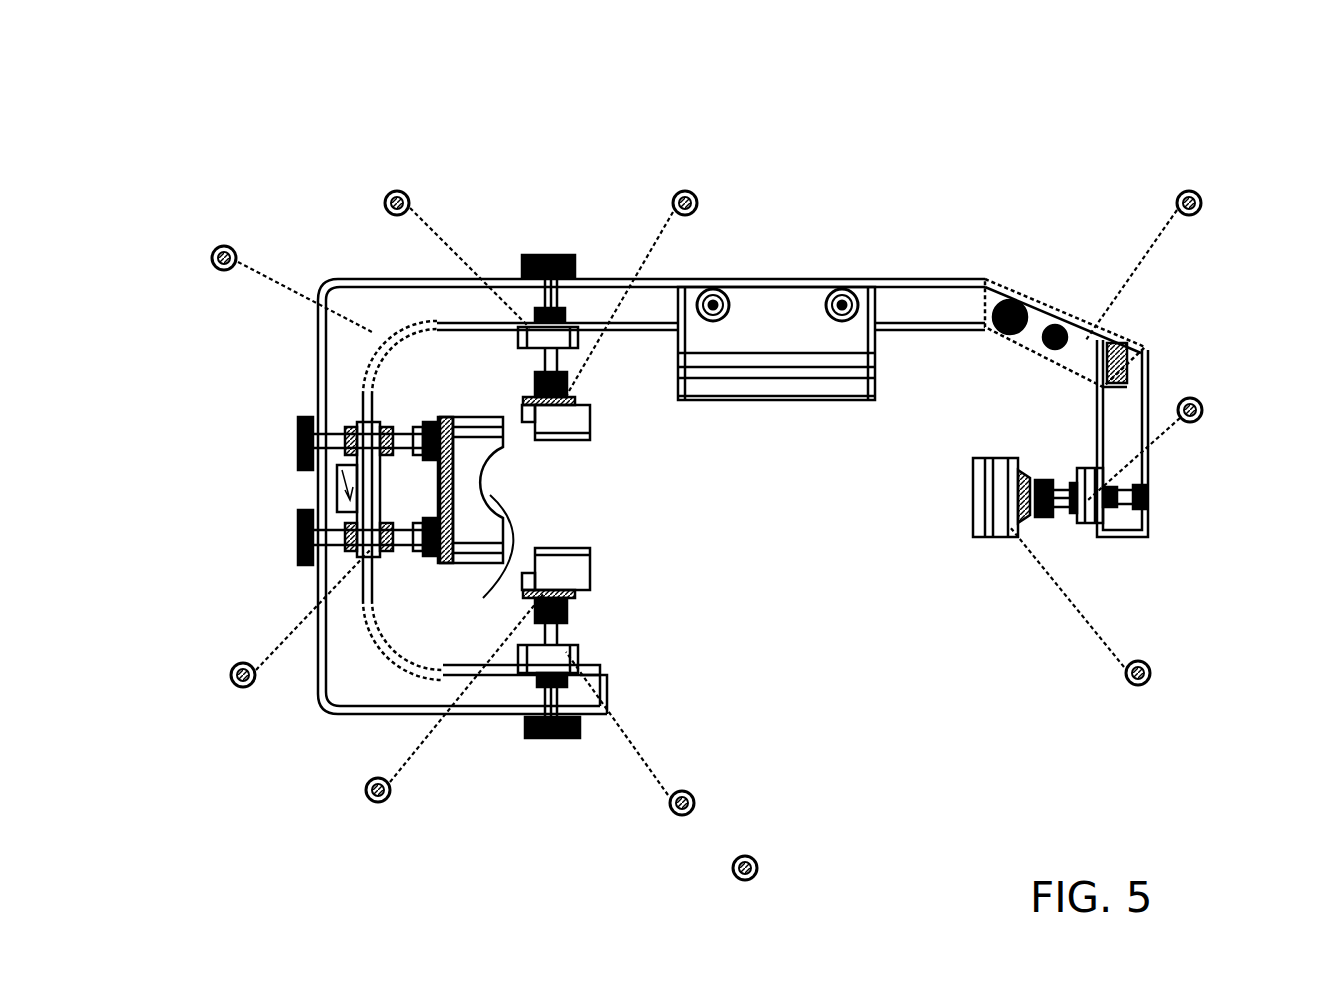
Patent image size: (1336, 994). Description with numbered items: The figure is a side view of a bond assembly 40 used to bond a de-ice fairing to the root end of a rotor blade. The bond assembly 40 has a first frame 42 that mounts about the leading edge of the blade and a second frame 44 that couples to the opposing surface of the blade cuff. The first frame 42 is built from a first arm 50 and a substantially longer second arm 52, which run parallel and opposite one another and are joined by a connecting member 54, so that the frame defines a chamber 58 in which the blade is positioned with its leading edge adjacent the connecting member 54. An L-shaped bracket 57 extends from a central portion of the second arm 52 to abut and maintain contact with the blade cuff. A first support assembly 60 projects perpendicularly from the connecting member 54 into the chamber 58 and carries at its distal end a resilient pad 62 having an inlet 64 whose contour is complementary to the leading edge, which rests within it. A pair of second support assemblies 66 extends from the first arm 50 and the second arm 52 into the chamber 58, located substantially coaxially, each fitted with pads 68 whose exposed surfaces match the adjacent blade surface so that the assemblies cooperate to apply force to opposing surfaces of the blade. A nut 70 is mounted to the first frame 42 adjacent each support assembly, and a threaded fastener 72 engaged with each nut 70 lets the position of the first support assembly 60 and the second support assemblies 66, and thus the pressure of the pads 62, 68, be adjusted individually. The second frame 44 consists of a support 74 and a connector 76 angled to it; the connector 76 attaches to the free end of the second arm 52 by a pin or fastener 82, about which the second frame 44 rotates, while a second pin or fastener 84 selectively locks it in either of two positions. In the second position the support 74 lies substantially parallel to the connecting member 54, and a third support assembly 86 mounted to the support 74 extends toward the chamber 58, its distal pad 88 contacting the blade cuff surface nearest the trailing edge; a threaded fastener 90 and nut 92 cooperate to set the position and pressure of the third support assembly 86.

The bond assembly 40 is at (210, 102).
The first frame 42 is at (316, 343).
The second frame 44 is at (1176, 337).
The first arm 50 is at (490, 697).
The second arm 52 is at (603, 302).
The connecting member 54 is at (355, 394).
The L-shaped bracket 57 is at (786, 372).
The chamber 58 is at (613, 488).
The first support assembly 60 is at (345, 488).
The pad 62 is at (465, 527).
The inlet 64 is at (505, 580).
The second support assemblies 66 is at (520, 326).
The pads 68 is at (590, 443).
The nut 70 is at (357, 410).
The threaded fastener 72 is at (340, 440).
The support 74 is at (1112, 427).
The connector 76 is at (1038, 322).
The pin or fastener 82 is at (1000, 322).
The second pin or fastener 84 is at (1052, 346).
The third support assembly 86 is at (1062, 530).
The pad 88 is at (984, 492).
The threaded fastener 90 is at (1135, 492).
The nut 92 is at (1110, 507).